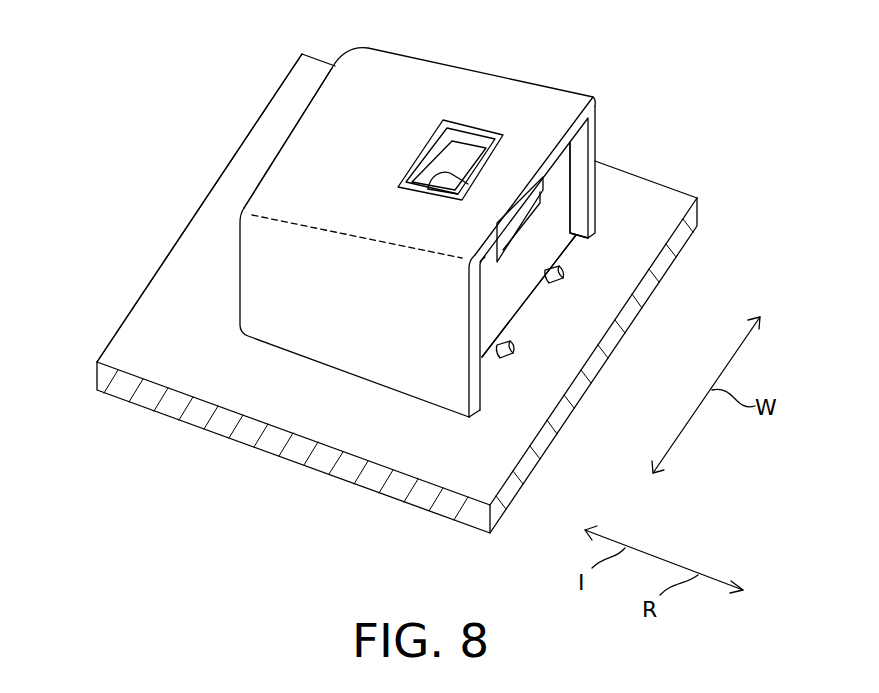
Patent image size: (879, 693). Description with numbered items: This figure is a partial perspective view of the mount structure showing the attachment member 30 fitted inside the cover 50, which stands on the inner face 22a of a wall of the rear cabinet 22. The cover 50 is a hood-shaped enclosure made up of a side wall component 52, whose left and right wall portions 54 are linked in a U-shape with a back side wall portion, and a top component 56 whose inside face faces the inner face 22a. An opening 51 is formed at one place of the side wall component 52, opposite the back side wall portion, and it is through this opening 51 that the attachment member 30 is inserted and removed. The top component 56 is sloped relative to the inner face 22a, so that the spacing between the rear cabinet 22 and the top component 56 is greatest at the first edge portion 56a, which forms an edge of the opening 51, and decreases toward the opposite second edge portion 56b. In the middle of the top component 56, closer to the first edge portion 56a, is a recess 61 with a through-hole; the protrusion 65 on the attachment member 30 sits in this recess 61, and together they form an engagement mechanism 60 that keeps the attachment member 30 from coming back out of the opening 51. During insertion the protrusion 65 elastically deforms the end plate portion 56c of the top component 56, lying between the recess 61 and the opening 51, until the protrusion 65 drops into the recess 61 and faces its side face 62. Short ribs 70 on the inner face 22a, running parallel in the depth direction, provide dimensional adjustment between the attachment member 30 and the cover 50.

The rear cabinet 22 is at (344, 481).
The inner face 22a is at (152, 350).
The attachment member 30 is at (547, 297).
The cover 50 is at (451, 211).
The opening 51 is at (584, 202).
The side wall component 52 is at (242, 293).
The left and right wall portions 54 is at (597, 136).
The top component 56 is at (446, 75).
The first edge portion 56a is at (565, 124).
The second edge portion 56b is at (280, 152).
The end plate portion 56c is at (505, 176).
The engagement mechanism 60 is at (500, 152).
The recess 61 is at (423, 148).
The side face 62 is at (432, 190).
The protrusion 65 is at (476, 155).
The ribs 70 is at (564, 267).